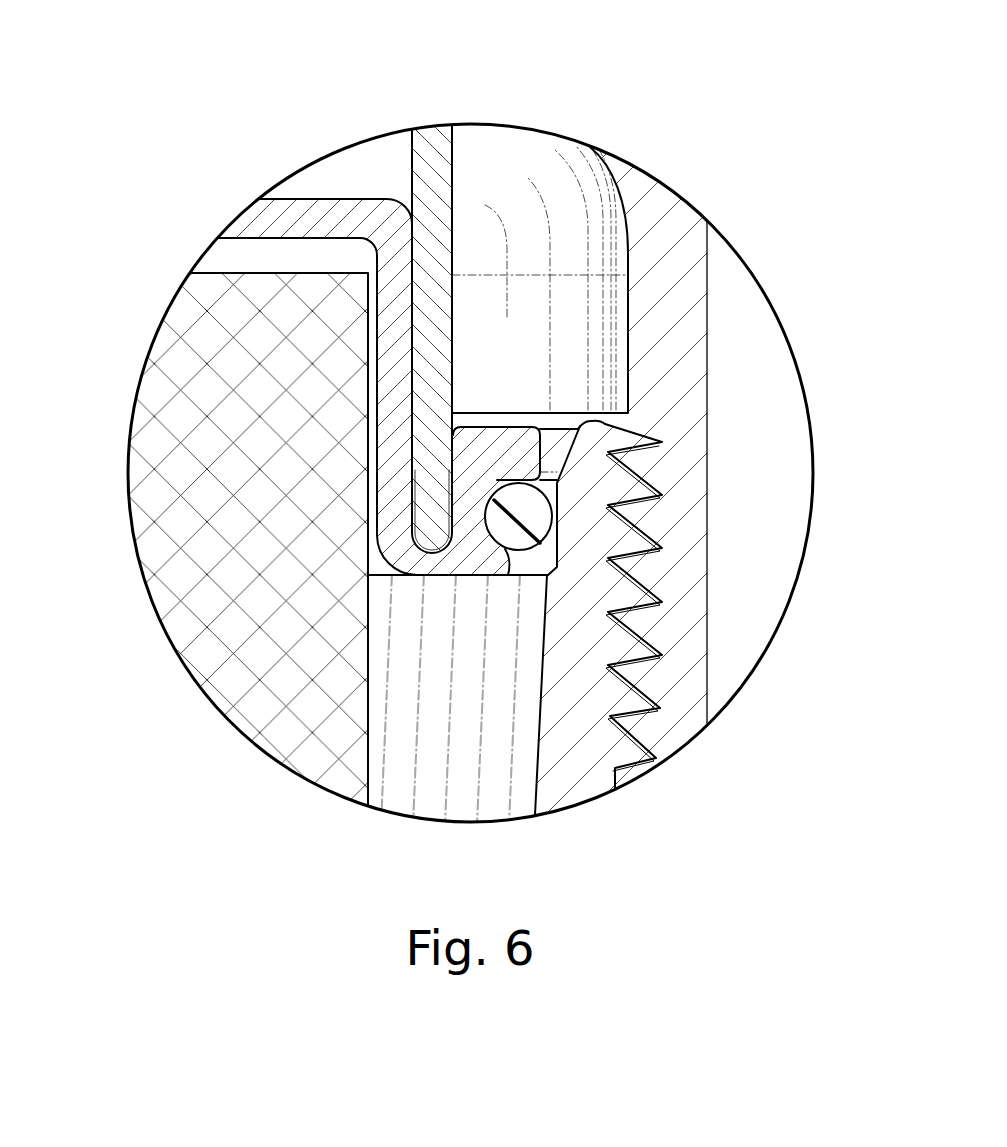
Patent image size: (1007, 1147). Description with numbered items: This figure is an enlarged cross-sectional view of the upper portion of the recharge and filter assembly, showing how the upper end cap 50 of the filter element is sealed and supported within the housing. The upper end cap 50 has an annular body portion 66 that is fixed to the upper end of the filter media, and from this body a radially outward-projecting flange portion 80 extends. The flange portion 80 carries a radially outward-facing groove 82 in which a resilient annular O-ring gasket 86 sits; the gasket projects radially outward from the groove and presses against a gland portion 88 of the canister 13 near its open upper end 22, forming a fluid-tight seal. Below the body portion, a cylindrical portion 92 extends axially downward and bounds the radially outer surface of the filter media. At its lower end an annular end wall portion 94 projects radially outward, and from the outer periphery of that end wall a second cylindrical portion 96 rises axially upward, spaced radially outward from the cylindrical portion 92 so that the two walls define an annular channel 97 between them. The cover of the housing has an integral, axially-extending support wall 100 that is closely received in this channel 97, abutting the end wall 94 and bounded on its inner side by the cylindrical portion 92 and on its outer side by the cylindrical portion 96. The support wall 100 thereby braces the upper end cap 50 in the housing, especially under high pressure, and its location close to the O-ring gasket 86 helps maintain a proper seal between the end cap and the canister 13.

The cylindrical canister 13 is at (598, 702).
The open upper end 22 is at (603, 433).
The upper end cap 50 is at (375, 207).
The annular body portion 66 is at (333, 212).
The flange portion 80 is at (517, 388).
The radially outward-facing groove 82 is at (493, 548).
The O-ring gasket 86 is at (538, 522).
The gland portion 88 is at (603, 490).
The cylindrical portion 92 is at (390, 417).
The annular end wall portion 94 is at (438, 567).
The cylindrical portion 96 is at (470, 516).
The annular channel 97 is at (427, 557).
The support wall 100 is at (440, 237).